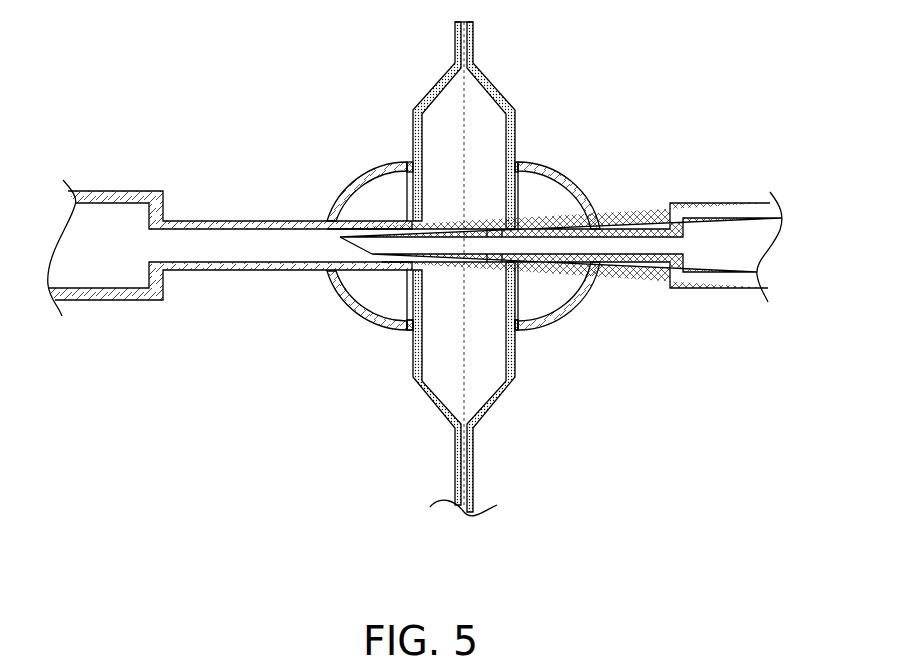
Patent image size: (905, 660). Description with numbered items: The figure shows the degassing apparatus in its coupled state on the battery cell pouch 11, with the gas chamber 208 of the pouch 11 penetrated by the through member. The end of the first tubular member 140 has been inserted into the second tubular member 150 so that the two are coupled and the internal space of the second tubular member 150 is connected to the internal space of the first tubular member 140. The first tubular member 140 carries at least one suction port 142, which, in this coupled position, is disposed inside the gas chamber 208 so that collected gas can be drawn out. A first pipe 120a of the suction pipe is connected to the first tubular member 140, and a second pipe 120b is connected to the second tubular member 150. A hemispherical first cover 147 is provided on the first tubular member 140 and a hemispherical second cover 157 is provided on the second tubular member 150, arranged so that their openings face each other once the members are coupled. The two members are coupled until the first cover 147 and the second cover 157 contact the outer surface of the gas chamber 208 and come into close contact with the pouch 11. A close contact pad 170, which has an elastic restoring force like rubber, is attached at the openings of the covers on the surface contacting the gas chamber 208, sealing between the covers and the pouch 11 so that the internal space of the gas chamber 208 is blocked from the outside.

The pouch 11 is at (473, 28).
The gas chamber 208 is at (488, 131).
The first pipe 120a is at (742, 202).
The second pipe 120b is at (113, 191).
The first tubular member 140 is at (489, 243).
The suction port 142 is at (494, 230).
The first cover 147 is at (594, 199).
The second tubular member 150 is at (420, 242).
The second cover 157 is at (357, 316).
The close contact pad 170 is at (405, 331).